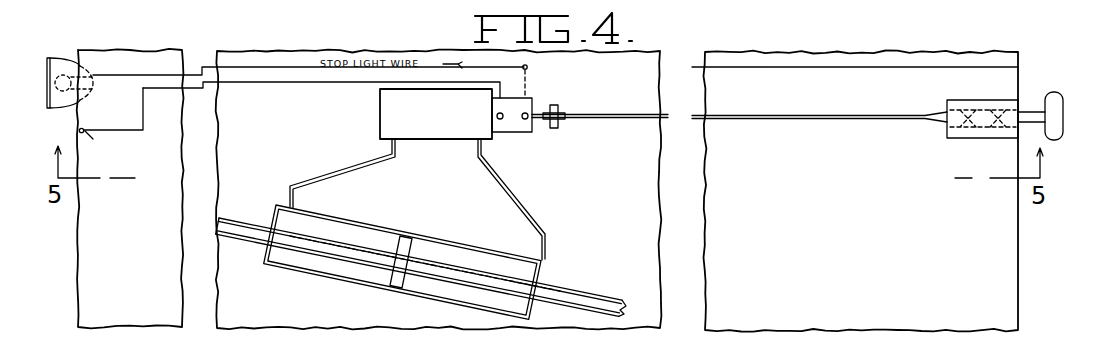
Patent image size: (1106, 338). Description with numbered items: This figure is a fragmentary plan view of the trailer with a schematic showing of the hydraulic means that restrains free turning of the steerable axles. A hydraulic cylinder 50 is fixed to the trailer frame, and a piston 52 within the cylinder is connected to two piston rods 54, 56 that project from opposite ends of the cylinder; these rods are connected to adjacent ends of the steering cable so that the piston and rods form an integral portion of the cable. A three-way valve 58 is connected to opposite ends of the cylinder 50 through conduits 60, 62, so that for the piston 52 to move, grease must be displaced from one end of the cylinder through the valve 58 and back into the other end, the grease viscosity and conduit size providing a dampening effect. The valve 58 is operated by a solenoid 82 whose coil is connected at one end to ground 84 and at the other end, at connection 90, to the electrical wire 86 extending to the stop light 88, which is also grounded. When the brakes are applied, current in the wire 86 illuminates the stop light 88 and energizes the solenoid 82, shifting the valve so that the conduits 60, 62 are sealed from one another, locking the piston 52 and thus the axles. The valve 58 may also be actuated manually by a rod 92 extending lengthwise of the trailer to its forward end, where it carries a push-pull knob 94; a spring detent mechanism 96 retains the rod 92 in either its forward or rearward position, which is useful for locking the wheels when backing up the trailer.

The hydraulic cylinder 50 is at (463, 244).
The piston 52 is at (408, 248).
The piston rod 54 is at (335, 252).
The piston rod 56 is at (565, 296).
The three-way valve 58 is at (388, 104).
The conduit 60 is at (342, 174).
The conduit 62 is at (513, 200).
The solenoid 82 is at (522, 133).
The ground 84 is at (84, 130).
The electrical wire 86 is at (607, 68).
The stop light 88 is at (80, 40).
The connection 90 is at (528, 70).
The rod 92 is at (862, 119).
The push-pull knob 94 is at (1072, 78).
The spring detent mechanism 96 is at (985, 131).